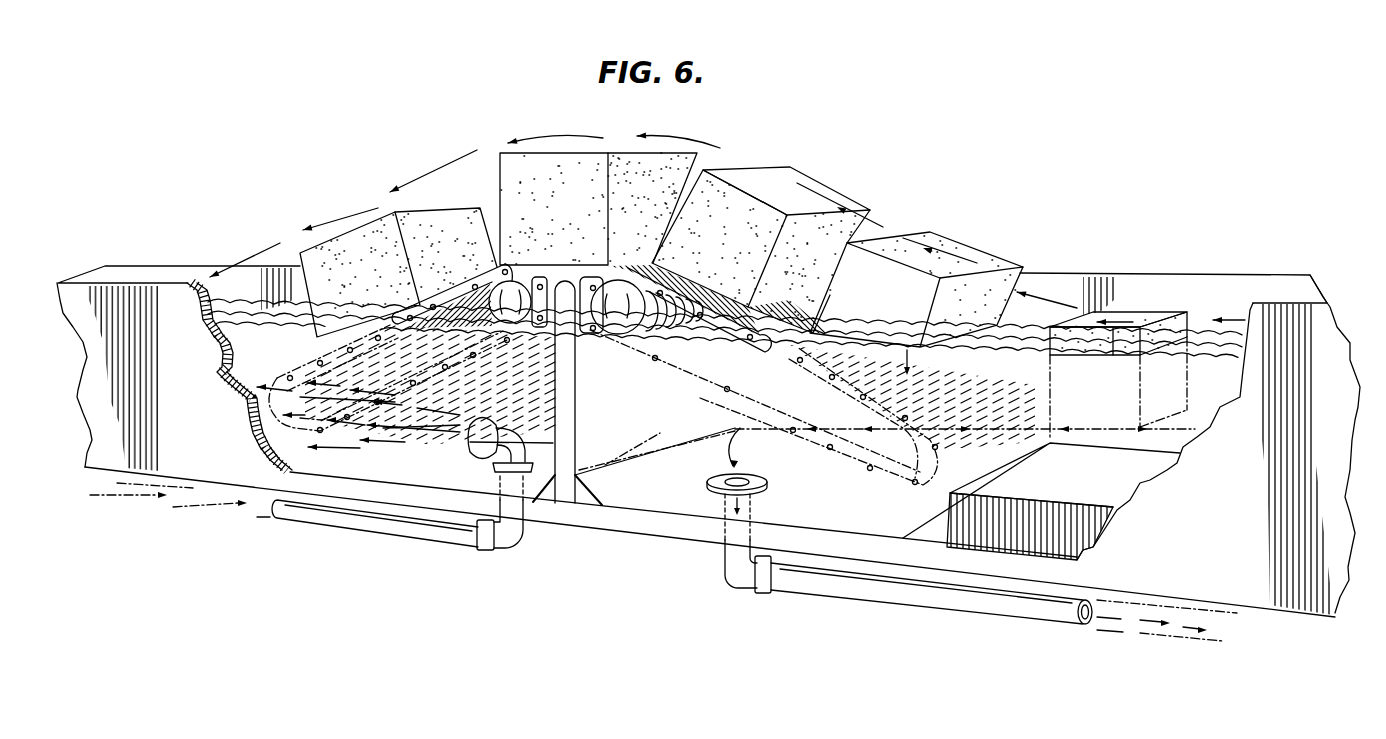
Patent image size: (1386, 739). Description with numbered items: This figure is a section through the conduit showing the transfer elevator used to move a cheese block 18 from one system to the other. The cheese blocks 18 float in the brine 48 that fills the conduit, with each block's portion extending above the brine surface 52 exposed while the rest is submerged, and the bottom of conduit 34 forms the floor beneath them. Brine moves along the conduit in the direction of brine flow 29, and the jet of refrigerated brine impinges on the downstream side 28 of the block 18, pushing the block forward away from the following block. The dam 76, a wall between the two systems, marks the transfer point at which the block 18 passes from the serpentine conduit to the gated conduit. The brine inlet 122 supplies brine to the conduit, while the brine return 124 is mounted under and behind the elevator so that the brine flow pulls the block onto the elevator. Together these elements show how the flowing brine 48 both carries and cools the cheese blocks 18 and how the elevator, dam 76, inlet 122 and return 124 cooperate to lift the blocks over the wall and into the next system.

The cheese block 18 is at (843, 202).
The downstream side of block 28 is at (1158, 383).
The direction of brine flow 29 is at (153, 497).
The bottom of conduit 34 is at (380, 437).
The brine 48 is at (207, 320).
The cheese block portion extending above brine surface 52 is at (1117, 343).
The transfer point or dam 76 is at (567, 480).
The brine inlet 122 is at (470, 455).
The brine return 124 is at (720, 470).